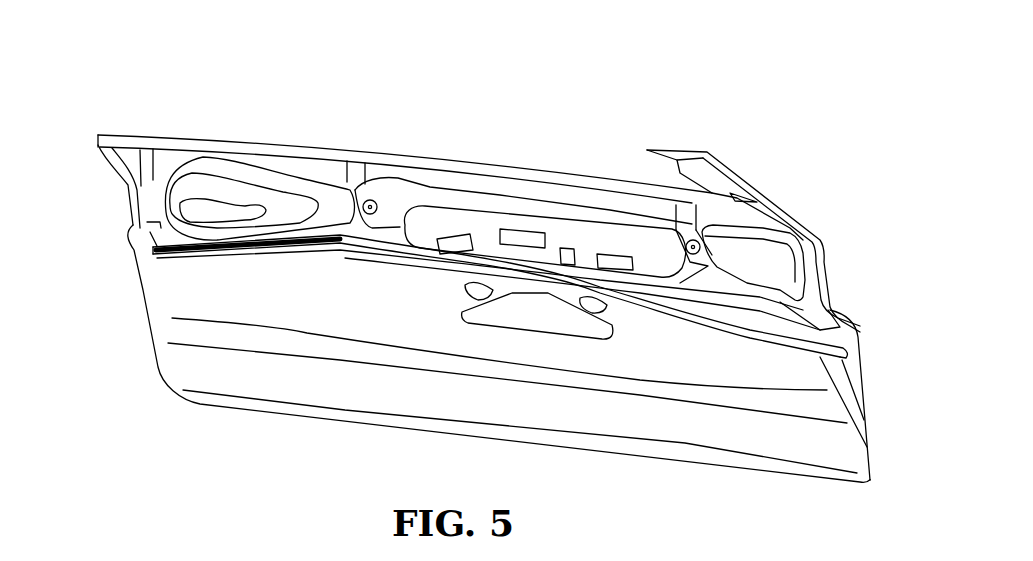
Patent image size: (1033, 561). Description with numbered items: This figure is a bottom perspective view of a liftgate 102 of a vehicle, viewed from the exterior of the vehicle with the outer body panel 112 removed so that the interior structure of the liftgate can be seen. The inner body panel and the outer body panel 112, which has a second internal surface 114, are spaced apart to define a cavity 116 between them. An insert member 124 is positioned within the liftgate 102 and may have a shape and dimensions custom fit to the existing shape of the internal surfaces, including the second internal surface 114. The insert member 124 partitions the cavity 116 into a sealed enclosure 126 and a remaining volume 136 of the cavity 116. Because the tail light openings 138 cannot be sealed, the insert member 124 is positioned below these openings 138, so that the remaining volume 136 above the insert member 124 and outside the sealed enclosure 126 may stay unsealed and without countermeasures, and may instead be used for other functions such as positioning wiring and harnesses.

The liftgate 102 is at (195, 90).
The outer body panel 112 is at (740, 152).
The second internal surface 114 is at (682, 270).
The cavity 116 is at (892, 210).
The insert member 124 is at (778, 333).
The sealed enclosure 126 is at (118, 252).
The remaining volume 136 is at (88, 155).
The openings 138 is at (752, 268).